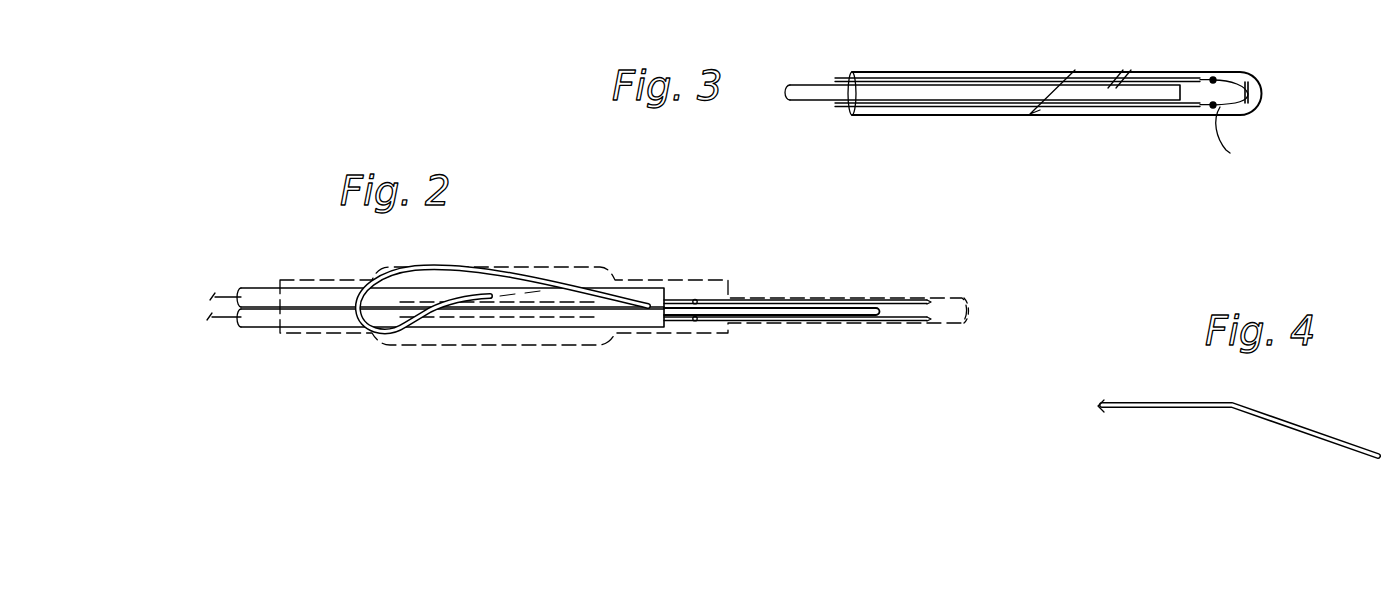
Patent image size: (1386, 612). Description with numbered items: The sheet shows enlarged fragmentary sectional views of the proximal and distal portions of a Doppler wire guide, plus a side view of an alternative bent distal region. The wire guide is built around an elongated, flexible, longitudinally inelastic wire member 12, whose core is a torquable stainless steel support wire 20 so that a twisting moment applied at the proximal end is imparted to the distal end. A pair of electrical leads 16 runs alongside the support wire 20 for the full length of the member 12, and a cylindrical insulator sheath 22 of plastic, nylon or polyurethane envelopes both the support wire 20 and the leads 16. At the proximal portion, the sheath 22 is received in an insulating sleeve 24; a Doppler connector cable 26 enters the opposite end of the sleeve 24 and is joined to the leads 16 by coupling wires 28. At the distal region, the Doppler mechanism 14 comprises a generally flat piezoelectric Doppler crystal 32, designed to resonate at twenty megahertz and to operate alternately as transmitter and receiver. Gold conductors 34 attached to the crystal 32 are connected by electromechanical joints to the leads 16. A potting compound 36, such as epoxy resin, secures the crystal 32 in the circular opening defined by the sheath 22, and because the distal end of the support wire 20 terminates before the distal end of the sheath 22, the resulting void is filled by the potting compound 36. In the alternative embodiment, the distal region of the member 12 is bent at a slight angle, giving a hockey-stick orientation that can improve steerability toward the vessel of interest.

In FIG. 4, the wire member 12 is at (1249, 398).
In FIG. 3, the Doppler mechanism 14 is at (1272, 111).
In FIG. 3, the electrical leads 16 is at (1207, 77).
In FIG. 2, the electrical leads 16 is at (897, 299).
In FIG. 3, the support wire 20 is at (800, 84).
In FIG. 2, the support wire 20 is at (762, 309).
In FIG. 3, the insulator sheath 22 is at (915, 72).
In FIG. 2, the insulator sheath 22 is at (962, 282).
In FIG. 2, the insulating sleeve 24 is at (606, 278).
In FIG. 2, the Doppler connector cable 26 is at (246, 286).
In FIG. 2, the coupling wires 28 is at (490, 282).
In FIG. 3, the Doppler crystal 32 is at (1250, 90).
In FIG. 3, the conductors 34 is at (1238, 137).
In FIG. 3, the potting compound 36 is at (1250, 82).